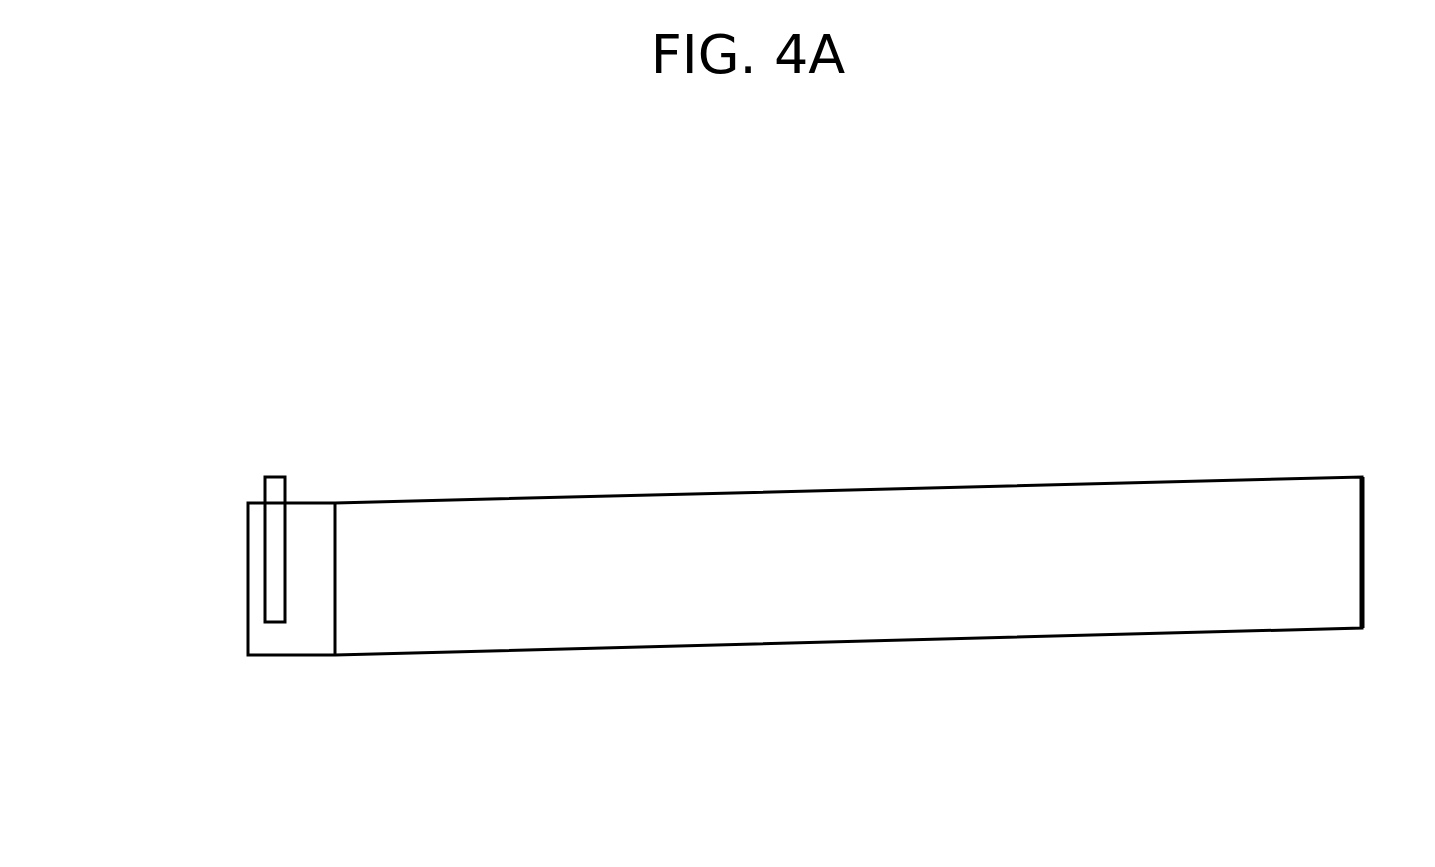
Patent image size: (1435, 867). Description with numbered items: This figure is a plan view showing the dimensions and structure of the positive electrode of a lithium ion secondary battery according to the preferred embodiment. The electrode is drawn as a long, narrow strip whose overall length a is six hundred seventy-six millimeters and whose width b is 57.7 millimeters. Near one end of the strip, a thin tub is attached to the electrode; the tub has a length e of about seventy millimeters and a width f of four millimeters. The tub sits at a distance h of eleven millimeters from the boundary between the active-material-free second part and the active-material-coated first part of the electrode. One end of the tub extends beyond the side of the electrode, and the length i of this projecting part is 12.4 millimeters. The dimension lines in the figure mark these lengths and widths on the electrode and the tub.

The length of the positive electrode a is at (251, 663).
The width of the positive electrode b is at (1370, 477).
The length of the tub e is at (233, 505).
The width of the tub f is at (230, 435).
The distance of the tub from the boundary h is at (285, 578).
The length of the projecting part of the tub i is at (198, 573).